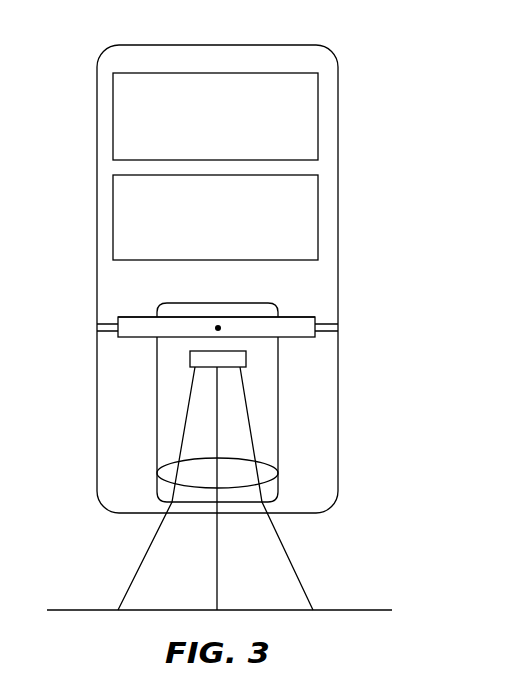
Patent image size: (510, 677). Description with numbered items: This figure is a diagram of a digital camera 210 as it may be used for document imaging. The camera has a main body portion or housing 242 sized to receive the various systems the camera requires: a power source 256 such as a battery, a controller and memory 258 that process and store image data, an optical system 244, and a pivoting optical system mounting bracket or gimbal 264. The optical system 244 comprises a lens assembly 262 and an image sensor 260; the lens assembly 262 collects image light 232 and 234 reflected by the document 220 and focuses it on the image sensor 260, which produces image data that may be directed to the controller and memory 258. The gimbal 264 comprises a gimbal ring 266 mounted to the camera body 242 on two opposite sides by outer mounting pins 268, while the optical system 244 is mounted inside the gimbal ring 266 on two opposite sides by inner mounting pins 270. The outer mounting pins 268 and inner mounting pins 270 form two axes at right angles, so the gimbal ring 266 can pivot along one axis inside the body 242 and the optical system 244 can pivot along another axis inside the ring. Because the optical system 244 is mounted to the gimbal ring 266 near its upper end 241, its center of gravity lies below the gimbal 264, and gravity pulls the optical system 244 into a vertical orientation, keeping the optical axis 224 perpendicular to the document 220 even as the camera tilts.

The digital camera 210 is at (358, 60).
The document 220 is at (60, 609).
The optical axis 224 is at (219, 590).
The image light 232 is at (130, 590).
The image light 234 is at (306, 590).
The upper end of the optical system 241 is at (277, 307).
The main body portion 242 is at (338, 120).
The optical system 244 is at (278, 415).
The power source 256 is at (113, 118).
The controller and memory 258 is at (113, 220).
The image sensor 260 is at (246, 355).
The lens assembly 262 is at (278, 470).
The gimbal 264 is at (347, 288).
The gimbal ring 266 is at (130, 316).
The outer mounting pins 268 is at (104, 322).
The inner mounting pins 270 is at (218, 328).